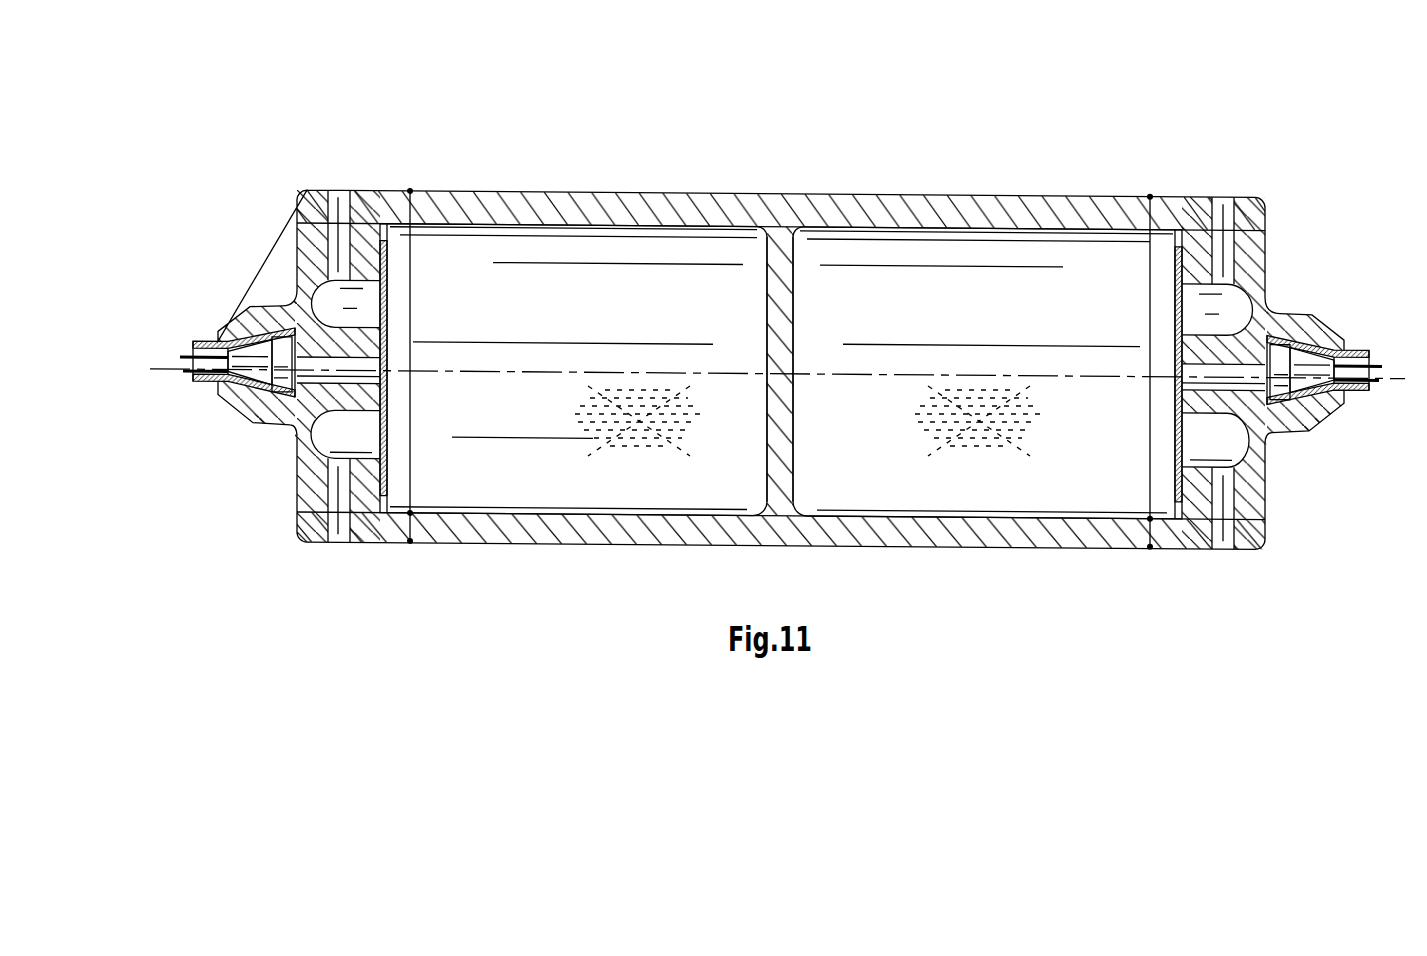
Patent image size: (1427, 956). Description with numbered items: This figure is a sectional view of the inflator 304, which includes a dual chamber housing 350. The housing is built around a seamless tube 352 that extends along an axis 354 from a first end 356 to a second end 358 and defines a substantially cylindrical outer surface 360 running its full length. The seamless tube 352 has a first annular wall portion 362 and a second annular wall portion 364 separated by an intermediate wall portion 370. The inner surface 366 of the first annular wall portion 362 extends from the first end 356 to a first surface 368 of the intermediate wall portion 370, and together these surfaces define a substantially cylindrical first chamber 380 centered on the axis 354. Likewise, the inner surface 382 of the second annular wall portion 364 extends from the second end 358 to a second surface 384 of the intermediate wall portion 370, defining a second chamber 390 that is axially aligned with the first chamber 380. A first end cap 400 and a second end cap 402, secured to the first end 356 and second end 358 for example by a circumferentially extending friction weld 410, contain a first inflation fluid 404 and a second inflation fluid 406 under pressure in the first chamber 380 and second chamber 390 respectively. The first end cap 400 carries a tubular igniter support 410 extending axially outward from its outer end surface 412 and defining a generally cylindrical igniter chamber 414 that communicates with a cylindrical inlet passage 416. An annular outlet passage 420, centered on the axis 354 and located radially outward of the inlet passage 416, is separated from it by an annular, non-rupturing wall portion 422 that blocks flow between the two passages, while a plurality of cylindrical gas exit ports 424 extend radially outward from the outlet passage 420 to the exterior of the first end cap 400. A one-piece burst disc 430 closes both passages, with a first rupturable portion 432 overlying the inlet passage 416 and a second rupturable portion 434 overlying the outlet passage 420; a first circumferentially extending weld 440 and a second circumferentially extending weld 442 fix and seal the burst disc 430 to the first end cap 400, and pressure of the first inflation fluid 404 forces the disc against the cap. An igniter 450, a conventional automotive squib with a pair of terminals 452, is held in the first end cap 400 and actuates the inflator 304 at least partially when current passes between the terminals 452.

The inflator 304 is at (752, 142).
The dual chamber housing 350 is at (822, 179).
The seamless tube 352 is at (900, 189).
The axis 354 is at (890, 375).
The first end 356 is at (388, 178).
The second end 358 is at (1175, 172).
The substantially cylindrical outer surface 360 is at (594, 191).
The first annular wall portion 362 is at (580, 548).
The second annular wall portion 364 is at (992, 550).
The inner surface 366 is at (608, 515).
The first surface 368 is at (768, 311).
The intermediate wall portion 370 is at (802, 452).
The first chamber 380 is at (522, 476).
The inner surface 382 is at (995, 517).
The second surface 384 is at (798, 311).
The second chamber 390 is at (921, 480).
The first end cap 400 is at (299, 178).
The second end cap 402 is at (1262, 176).
The first inflation fluid 404 is at (640, 418).
The second inflation fluid 406 is at (972, 412).
The tubular igniter support 410 is at (410, 190).
The outer end surface 412 is at (296, 207).
The igniter chamber 414 is at (207, 401).
The inlet passage 416 is at (340, 430).
The annular outlet passage 420 is at (322, 372).
The annular non-rupturing wall portion 422 is at (358, 313).
The cylindrical gas exit ports 424 is at (338, 545).
The burst disc 430 is at (389, 299).
The first rupturable portion 432 is at (383, 372).
The second rupturable portion 434 is at (385, 437).
The first circumferentially extending weld 440 is at (385, 343).
The second circumferentially extending weld 442 is at (388, 246).
The igniter 450 is at (178, 350).
The terminals 452 is at (182, 377).